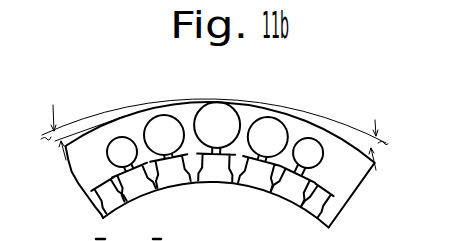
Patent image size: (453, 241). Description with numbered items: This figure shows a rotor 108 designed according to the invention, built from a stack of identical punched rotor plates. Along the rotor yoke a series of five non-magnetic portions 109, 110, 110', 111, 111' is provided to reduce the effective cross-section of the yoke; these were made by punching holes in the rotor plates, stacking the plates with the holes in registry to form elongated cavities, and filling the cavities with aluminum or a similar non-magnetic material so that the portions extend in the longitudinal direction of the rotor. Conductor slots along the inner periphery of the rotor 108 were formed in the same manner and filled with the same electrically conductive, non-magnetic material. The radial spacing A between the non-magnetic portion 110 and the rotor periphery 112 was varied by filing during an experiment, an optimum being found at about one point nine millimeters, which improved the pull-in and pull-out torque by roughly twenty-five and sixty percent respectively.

The rotor 108 is at (81, 176).
The non-magnetic portion 109 is at (217, 113).
The non-magnetic portion 110 is at (164, 110).
The non-magnetic portion 110' is at (276, 112).
The non-magnetic portion 111 is at (108, 123).
The non-magnetic portion 111' is at (321, 125).
The rotor periphery 112 is at (379, 163).